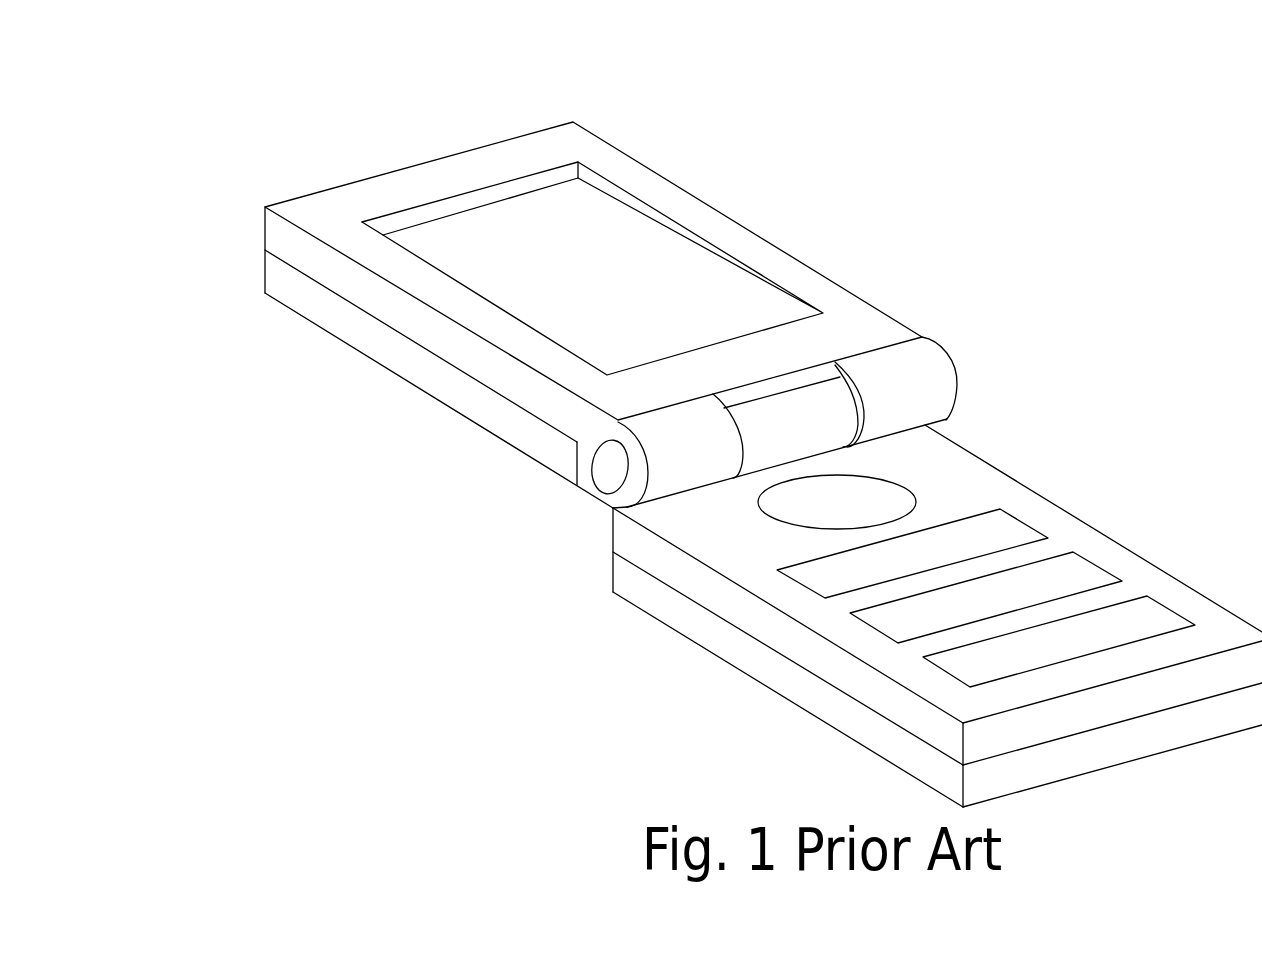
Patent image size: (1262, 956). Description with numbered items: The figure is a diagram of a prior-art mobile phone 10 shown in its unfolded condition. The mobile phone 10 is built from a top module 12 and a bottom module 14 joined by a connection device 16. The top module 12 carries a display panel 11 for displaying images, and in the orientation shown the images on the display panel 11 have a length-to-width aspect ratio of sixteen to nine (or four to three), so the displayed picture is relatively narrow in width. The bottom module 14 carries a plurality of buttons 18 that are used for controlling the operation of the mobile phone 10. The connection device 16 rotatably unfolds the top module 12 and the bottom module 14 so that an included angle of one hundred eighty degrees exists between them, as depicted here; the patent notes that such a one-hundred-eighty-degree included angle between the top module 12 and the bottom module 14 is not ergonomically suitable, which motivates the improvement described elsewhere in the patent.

The mobile phone 10 is at (1086, 222).
The display panel 11 is at (660, 257).
The top module 12 is at (497, 160).
The bottom module 14 is at (693, 620).
The connection device 16 is at (825, 410).
The buttons 18 is at (1083, 573).